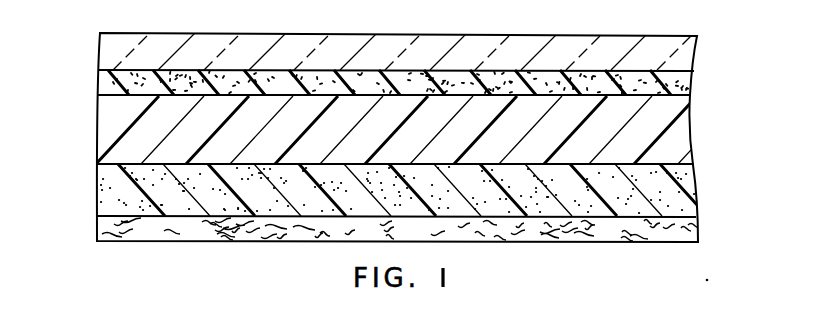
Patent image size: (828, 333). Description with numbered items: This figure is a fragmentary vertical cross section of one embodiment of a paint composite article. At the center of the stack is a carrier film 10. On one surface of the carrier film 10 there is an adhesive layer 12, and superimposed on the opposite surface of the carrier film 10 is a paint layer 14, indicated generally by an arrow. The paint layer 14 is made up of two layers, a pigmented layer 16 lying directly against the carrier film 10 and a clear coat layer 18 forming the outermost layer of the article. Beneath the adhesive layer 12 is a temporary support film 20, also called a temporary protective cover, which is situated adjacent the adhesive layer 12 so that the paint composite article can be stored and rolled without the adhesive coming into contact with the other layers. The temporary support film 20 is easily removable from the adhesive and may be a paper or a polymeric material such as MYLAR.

The carrier film 10 is at (695, 136).
The adhesive layer 12 is at (696, 200).
The paint layer 14 is at (90, 74).
The pigmented layer 16 is at (689, 82).
The clear coat layer 18 is at (700, 46).
The temporary support film 20 is at (97, 228).